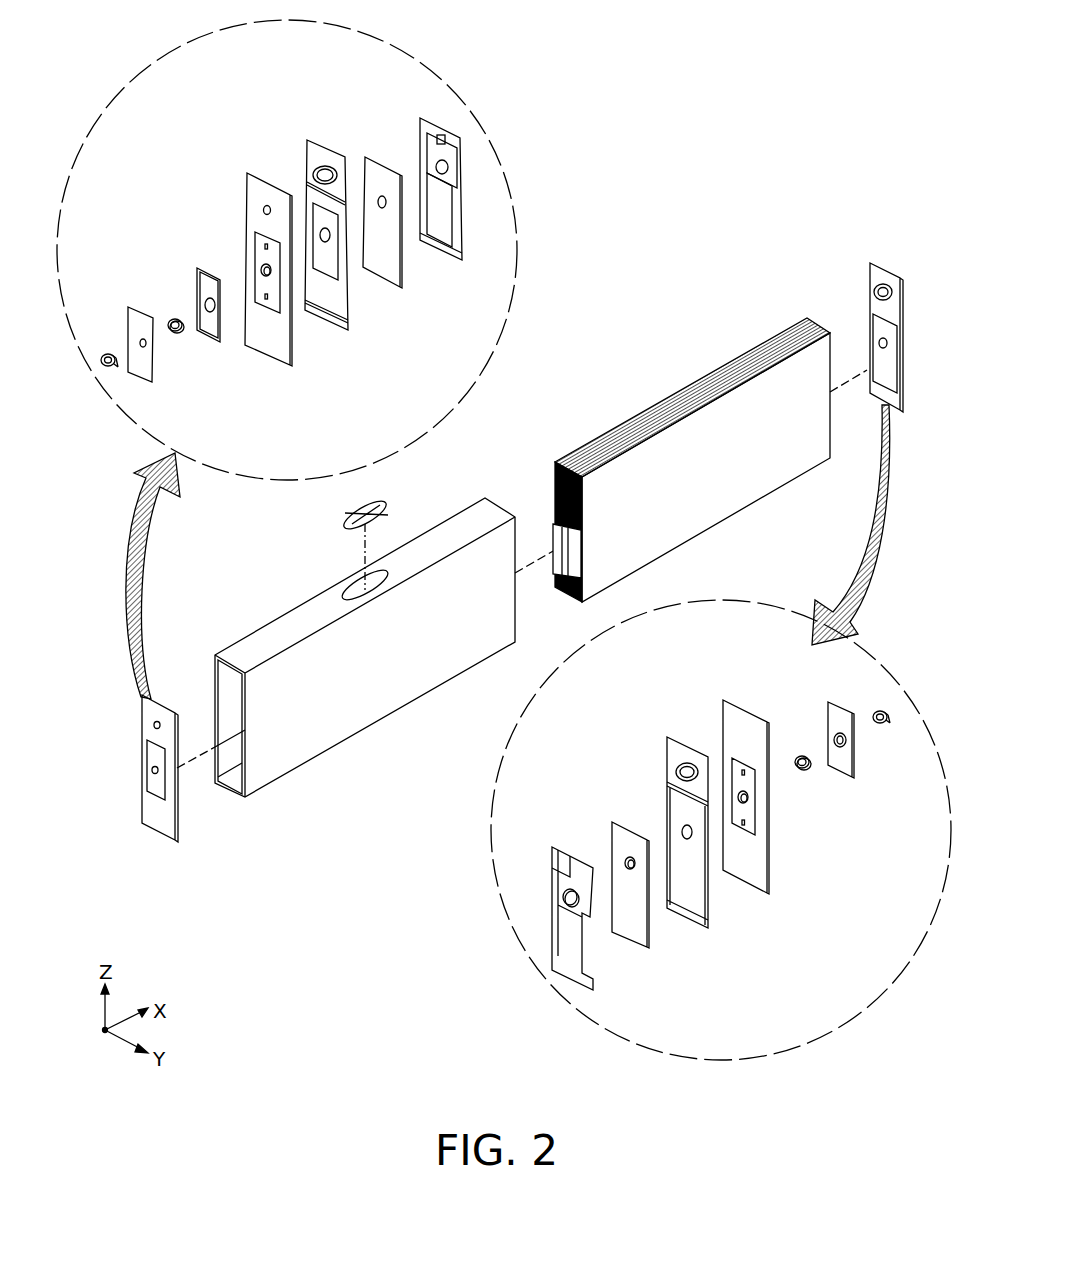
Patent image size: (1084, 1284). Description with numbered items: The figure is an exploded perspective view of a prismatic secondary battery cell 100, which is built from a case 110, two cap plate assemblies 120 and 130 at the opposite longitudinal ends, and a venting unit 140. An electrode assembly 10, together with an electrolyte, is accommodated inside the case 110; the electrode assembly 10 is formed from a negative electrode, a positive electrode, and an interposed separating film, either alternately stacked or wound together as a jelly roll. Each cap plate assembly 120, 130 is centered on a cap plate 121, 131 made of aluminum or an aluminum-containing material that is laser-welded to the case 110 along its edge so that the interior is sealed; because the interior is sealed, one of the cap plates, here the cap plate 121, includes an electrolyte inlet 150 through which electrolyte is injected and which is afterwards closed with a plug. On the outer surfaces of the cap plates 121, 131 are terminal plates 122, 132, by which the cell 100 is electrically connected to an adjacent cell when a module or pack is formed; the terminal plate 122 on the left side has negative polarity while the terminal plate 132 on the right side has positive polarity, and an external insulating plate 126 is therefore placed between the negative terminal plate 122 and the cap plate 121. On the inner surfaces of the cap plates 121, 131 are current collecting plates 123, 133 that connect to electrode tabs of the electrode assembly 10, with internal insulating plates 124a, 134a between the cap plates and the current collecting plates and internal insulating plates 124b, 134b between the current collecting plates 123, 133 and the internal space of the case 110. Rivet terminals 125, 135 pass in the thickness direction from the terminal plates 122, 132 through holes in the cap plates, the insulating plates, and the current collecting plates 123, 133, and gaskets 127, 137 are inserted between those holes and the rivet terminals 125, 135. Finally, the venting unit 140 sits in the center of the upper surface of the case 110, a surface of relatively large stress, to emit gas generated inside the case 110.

The secondary battery cell 100 is at (582, 24).
The electrode assembly 10 is at (700, 387).
The case 110 is at (338, 725).
The cap plate assembly 120 is at (128, 802).
The cap plate 121 is at (247, 185).
The terminal plate 122 is at (132, 310).
The current collecting plate 123 is at (370, 170).
The internal insulating plate 124a is at (308, 153).
The internal insulating plate 124b is at (420, 147).
The rivet terminal 125 is at (106, 357).
The external insulating plate 126 is at (200, 280).
The gasket 127 is at (179, 333).
The cap plate assembly 130 is at (857, 288).
The cap plate 131 is at (727, 718).
The terminal plate 132 is at (832, 718).
The current collecting plate 133 is at (617, 837).
The internal insulating plate 134a is at (672, 750).
The internal insulating plate 134b is at (553, 862).
The rivet terminal 135 is at (884, 727).
The gasket 137 is at (806, 770).
The venting unit 140 is at (340, 512).
The electrolyte inlet 150 is at (154, 727).